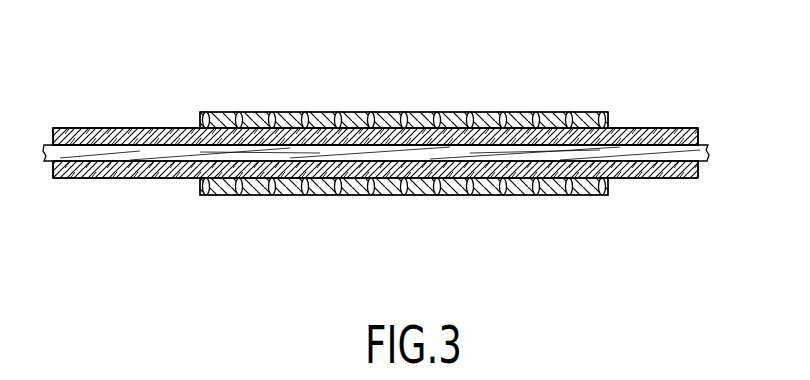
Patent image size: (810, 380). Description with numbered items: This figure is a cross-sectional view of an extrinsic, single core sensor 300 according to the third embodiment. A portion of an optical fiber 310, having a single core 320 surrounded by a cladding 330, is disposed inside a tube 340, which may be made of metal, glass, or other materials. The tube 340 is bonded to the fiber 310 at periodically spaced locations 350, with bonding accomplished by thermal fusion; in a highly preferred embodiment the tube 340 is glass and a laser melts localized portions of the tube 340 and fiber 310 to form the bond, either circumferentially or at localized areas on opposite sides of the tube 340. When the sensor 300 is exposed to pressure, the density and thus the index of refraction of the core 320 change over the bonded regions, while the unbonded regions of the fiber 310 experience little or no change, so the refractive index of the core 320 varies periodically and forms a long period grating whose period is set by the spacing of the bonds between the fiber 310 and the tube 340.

The extrinsic single core sensor 300 is at (538, 74).
The optical fiber 310 is at (124, 175).
The core 320 is at (668, 161).
The cladding 330 is at (653, 128).
The tube 340 is at (217, 112).
The periodically spaced locations 350 is at (402, 196).